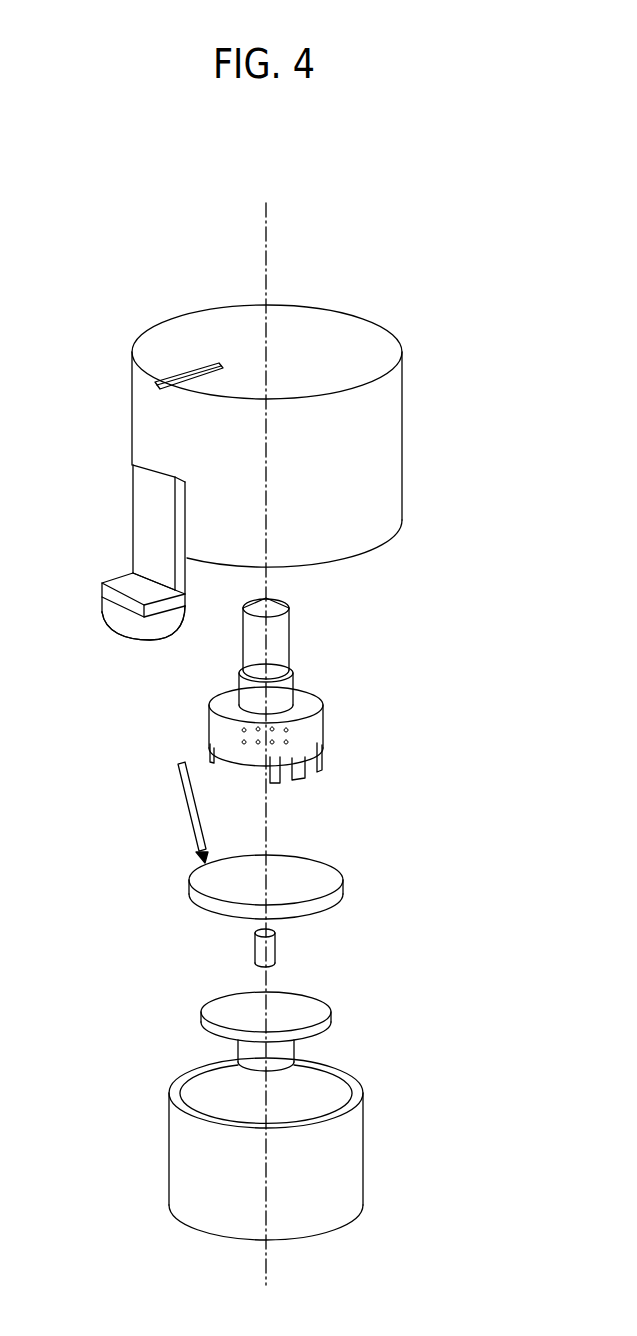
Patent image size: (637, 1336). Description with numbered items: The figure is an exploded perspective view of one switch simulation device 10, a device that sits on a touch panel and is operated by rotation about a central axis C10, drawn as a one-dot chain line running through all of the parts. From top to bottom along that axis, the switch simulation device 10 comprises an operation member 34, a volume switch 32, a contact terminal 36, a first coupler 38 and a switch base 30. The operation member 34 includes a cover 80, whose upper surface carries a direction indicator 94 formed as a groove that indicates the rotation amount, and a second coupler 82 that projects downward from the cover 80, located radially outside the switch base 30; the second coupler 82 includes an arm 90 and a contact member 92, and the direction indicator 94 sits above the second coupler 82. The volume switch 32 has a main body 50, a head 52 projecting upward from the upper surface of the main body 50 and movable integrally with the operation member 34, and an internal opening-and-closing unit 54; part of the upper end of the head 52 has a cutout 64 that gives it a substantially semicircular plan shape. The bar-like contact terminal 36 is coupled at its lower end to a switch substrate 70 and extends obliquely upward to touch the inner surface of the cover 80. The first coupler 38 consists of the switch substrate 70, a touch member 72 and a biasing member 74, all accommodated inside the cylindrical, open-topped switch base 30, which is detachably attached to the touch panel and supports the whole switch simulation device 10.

The switch simulation device 10 is at (84, 254).
The central axis C10 is at (269, 231).
The switch base 30 is at (364, 1142).
The volume switch 32 is at (354, 681).
The operation member 34 is at (261, 436).
The contact terminal 36 is at (188, 808).
The first coupler 38 is at (277, 963).
The main body 50 is at (323, 717).
The head 52 is at (329, 646).
The internal opening-and-closing unit 54 is at (314, 763).
The cutout 64 is at (272, 603).
The switch substrate 70 is at (344, 887).
The touch member 72 is at (332, 1015).
The biasing member 74 is at (277, 950).
The cover 80 is at (115, 523).
The second coupler 82 is at (105, 581).
The arm 90 is at (133, 540).
The contact member 92 is at (110, 624).
The direction indicator 94 is at (160, 384).